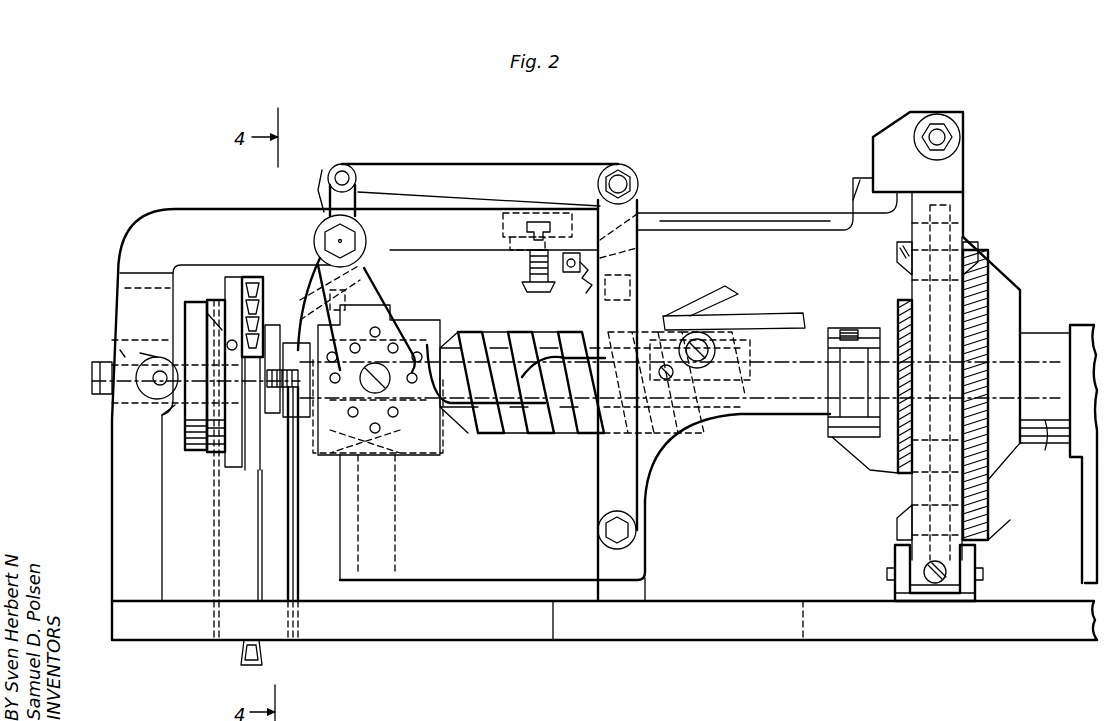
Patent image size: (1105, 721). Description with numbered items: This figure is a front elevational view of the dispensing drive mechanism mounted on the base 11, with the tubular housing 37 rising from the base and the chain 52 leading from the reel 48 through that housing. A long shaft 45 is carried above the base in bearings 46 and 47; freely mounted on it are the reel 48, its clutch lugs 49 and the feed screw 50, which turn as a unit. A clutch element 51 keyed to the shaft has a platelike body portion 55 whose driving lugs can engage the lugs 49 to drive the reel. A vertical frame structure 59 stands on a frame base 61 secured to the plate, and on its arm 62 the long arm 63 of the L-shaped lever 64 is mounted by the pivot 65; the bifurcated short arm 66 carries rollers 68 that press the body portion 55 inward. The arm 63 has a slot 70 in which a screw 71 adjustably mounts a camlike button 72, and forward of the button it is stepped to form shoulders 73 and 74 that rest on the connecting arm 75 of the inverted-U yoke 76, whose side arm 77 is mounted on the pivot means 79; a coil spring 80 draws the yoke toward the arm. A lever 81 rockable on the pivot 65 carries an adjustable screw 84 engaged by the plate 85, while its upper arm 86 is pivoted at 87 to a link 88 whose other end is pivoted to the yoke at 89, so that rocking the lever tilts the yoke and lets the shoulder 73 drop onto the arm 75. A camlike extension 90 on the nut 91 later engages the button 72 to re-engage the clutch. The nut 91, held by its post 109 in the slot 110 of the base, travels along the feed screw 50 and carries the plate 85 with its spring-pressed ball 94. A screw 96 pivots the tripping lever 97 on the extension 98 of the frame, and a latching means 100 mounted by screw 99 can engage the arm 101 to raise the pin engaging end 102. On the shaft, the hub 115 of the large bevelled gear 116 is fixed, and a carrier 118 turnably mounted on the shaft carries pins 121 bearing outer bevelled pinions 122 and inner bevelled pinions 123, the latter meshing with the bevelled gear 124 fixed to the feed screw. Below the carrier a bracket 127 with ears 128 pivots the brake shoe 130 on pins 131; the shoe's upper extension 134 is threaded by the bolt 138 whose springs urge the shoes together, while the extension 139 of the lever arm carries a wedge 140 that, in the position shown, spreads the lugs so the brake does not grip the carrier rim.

The base 11 is at (155, 625).
The slot 110 is at (553, 625).
The tubular housing 37 is at (215, 518).
The shaft 45 is at (92, 378).
The bearing 46 is at (1080, 328).
The bearing 47 is at (128, 352).
The reel 48 is at (258, 478).
The clutch lugs 49 is at (215, 448).
The feed screw 50 is at (480, 342).
The clutch element 51 is at (183, 440).
The chain 52 is at (275, 662).
The body portion 55 is at (195, 315).
The frame structure 59 is at (460, 553).
The frame base 61 is at (648, 595).
The arm 62 is at (370, 268).
The long arm 63 is at (448, 226).
The L-shaped lever 64 is at (137, 218).
The pivot 65 is at (345, 241).
The arm 66 is at (145, 305).
The rollers 68 is at (172, 415).
The slot 70 is at (520, 262).
The screw 71 is at (548, 222).
The button 72 is at (532, 284).
The shoulder 73 is at (637, 220).
The shoulder 74 is at (632, 250).
The connecting arm 75 is at (645, 258).
The yoke 76 is at (650, 300).
The side arm 77 is at (622, 473).
The pivot means 79 is at (638, 530).
The coil spring 80 is at (578, 278).
The lever 81 is at (305, 240).
The adjustable screw 84 is at (304, 494).
The plate 85 is at (388, 437).
The upper arm 86 is at (333, 175).
The pivot 87 is at (347, 175).
The link 88 is at (415, 173).
The pivot 89 is at (625, 180).
The camlike extension 90 is at (352, 290).
The nut 91 is at (438, 318).
The ball 94 is at (398, 308).
The screw 96 is at (698, 345).
The tripping lever 97 is at (740, 305).
The extension 98 is at (745, 392).
The screw 99 is at (742, 313).
The latching means 100 is at (808, 318).
The arm 101 is at (736, 290).
The pin engaging end 102 is at (532, 348).
The post 109 is at (383, 523).
The hub 115 is at (1048, 340).
The bevelled gear 116 is at (1005, 280).
The carrier 118 is at (978, 232).
The pins 121 is at (930, 483).
The outer bevelled pinion 122 is at (896, 524).
The inner bevelled pinion 123 is at (898, 476).
The bevelled gear 124 is at (892, 322).
The bracket 127 is at (880, 586).
The ears 128 is at (968, 558).
The brake shoe 130 is at (946, 192).
The pins 131 is at (982, 578).
The extension 134 is at (898, 140).
The bolt 138 is at (962, 134).
The extension 139 is at (748, 222).
The wedge 140 is at (866, 178).